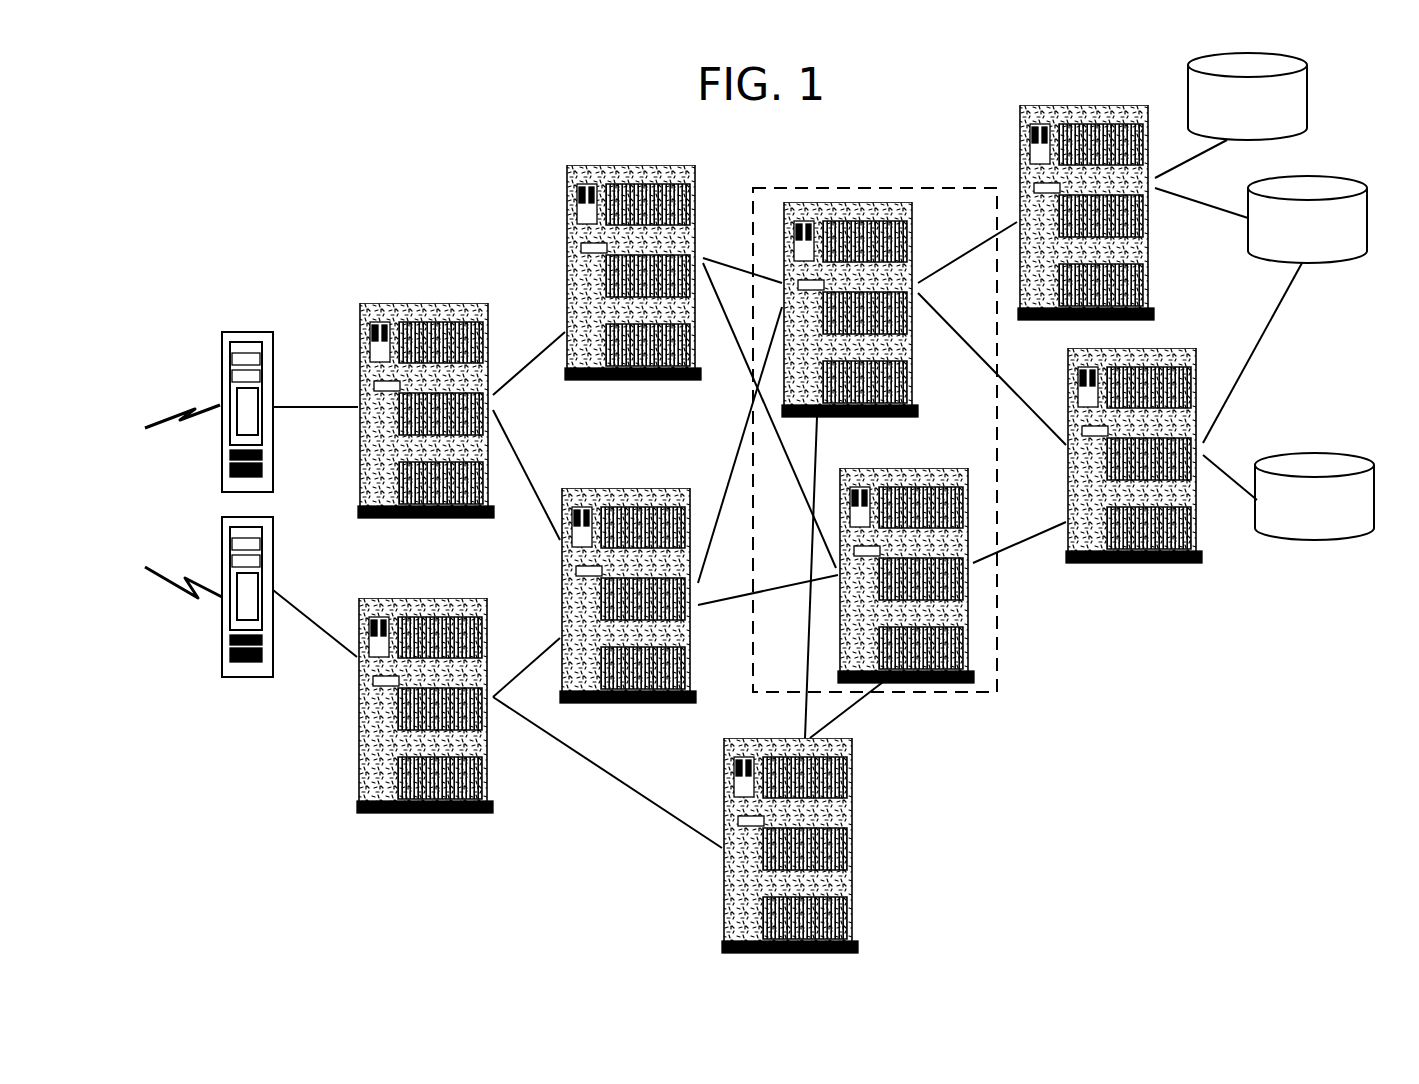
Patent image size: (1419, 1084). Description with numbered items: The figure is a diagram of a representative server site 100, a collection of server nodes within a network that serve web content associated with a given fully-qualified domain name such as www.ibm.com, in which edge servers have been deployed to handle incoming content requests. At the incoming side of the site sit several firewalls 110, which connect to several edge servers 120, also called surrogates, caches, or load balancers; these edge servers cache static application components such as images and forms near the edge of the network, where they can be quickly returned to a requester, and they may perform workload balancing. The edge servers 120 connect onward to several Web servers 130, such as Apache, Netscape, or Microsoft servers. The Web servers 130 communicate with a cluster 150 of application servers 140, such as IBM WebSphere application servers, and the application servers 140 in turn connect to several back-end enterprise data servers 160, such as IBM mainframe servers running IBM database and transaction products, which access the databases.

The server site 100 is at (291, 168).
The firewall 110 is at (241, 499).
The edge server 120 is at (428, 558).
The Web server 130 is at (738, 548).
The application server 140 is at (883, 442).
The cluster 150 is at (902, 440).
The back-end enterprise data server 160 is at (1086, 334).